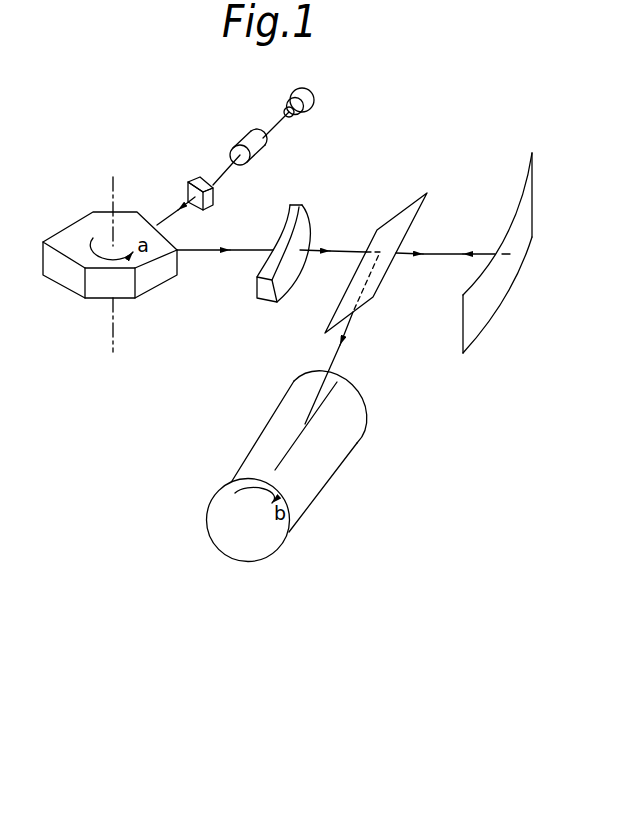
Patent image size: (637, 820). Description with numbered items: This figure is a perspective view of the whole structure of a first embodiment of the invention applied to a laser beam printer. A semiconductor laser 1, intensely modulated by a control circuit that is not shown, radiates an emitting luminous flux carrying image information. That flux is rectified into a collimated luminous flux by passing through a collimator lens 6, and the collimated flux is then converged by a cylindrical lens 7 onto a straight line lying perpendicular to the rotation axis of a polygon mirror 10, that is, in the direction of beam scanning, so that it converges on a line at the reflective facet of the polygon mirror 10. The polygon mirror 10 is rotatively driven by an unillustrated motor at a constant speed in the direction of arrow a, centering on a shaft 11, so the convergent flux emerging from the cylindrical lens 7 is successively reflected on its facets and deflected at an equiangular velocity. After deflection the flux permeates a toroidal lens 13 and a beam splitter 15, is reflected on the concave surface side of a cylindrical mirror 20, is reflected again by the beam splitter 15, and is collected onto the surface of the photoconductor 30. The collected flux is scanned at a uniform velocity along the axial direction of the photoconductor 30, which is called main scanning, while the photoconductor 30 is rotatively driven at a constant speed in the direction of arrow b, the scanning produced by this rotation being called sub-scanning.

The semiconductor laser 1 is at (309, 89).
The collimator lens 6 is at (243, 132).
The cylindrical lens 7 is at (193, 178).
The polygon mirror 10 is at (62, 286).
The shaft 11 is at (113, 195).
The toroidal lens 13 is at (311, 218).
The beam splitter 15 is at (408, 205).
The cylindrical mirror 20 is at (513, 215).
The photoconductor 30 is at (337, 470).